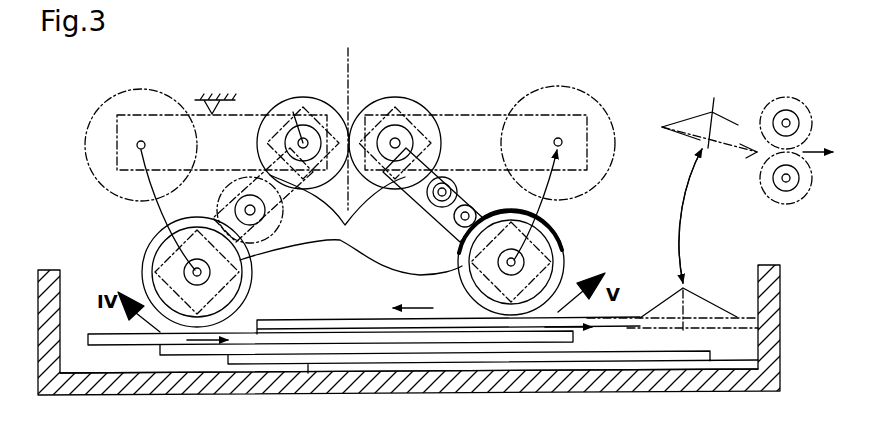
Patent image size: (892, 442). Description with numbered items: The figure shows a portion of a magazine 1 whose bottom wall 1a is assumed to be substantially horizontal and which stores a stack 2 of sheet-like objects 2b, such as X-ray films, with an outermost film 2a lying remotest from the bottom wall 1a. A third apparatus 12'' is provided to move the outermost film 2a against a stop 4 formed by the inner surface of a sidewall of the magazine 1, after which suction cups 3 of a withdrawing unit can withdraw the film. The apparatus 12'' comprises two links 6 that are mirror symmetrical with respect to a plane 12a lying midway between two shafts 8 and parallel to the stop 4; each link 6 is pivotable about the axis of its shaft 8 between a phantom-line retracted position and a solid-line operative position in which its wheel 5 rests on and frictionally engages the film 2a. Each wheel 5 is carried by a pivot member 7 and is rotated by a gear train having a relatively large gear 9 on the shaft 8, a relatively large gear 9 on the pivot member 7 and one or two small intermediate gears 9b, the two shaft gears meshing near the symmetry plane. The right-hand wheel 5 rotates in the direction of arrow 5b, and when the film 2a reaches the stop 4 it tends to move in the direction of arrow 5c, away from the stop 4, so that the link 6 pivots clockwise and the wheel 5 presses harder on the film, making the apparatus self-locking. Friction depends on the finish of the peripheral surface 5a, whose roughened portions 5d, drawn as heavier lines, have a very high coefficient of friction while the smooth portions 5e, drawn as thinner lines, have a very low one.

The magazine 1 is at (36, 338).
The bottom wall 1a is at (693, 380).
The stack 2 is at (260, 321).
The outermost film 2a is at (333, 330).
The sheet-like objects 2b is at (546, 356).
The suction cups 3 is at (713, 112).
The stop 4 is at (758, 317).
The wheel 5 is at (248, 272).
The peripheral surface 5a is at (568, 218).
The arrow 5b is at (510, 212).
The arrow 5c is at (413, 298).
The surface portions 5d is at (578, 268).
The surface portions 5e is at (590, 222).
The link 6 is at (262, 172).
The pivot member 7 is at (195, 272).
The shaft 8 is at (301, 140).
The gear 9 is at (351, 225).
The intermediate gear 9b is at (218, 186).
The symmetry plane 12a is at (349, 88).
The apparatus 12'' is at (395, 128).